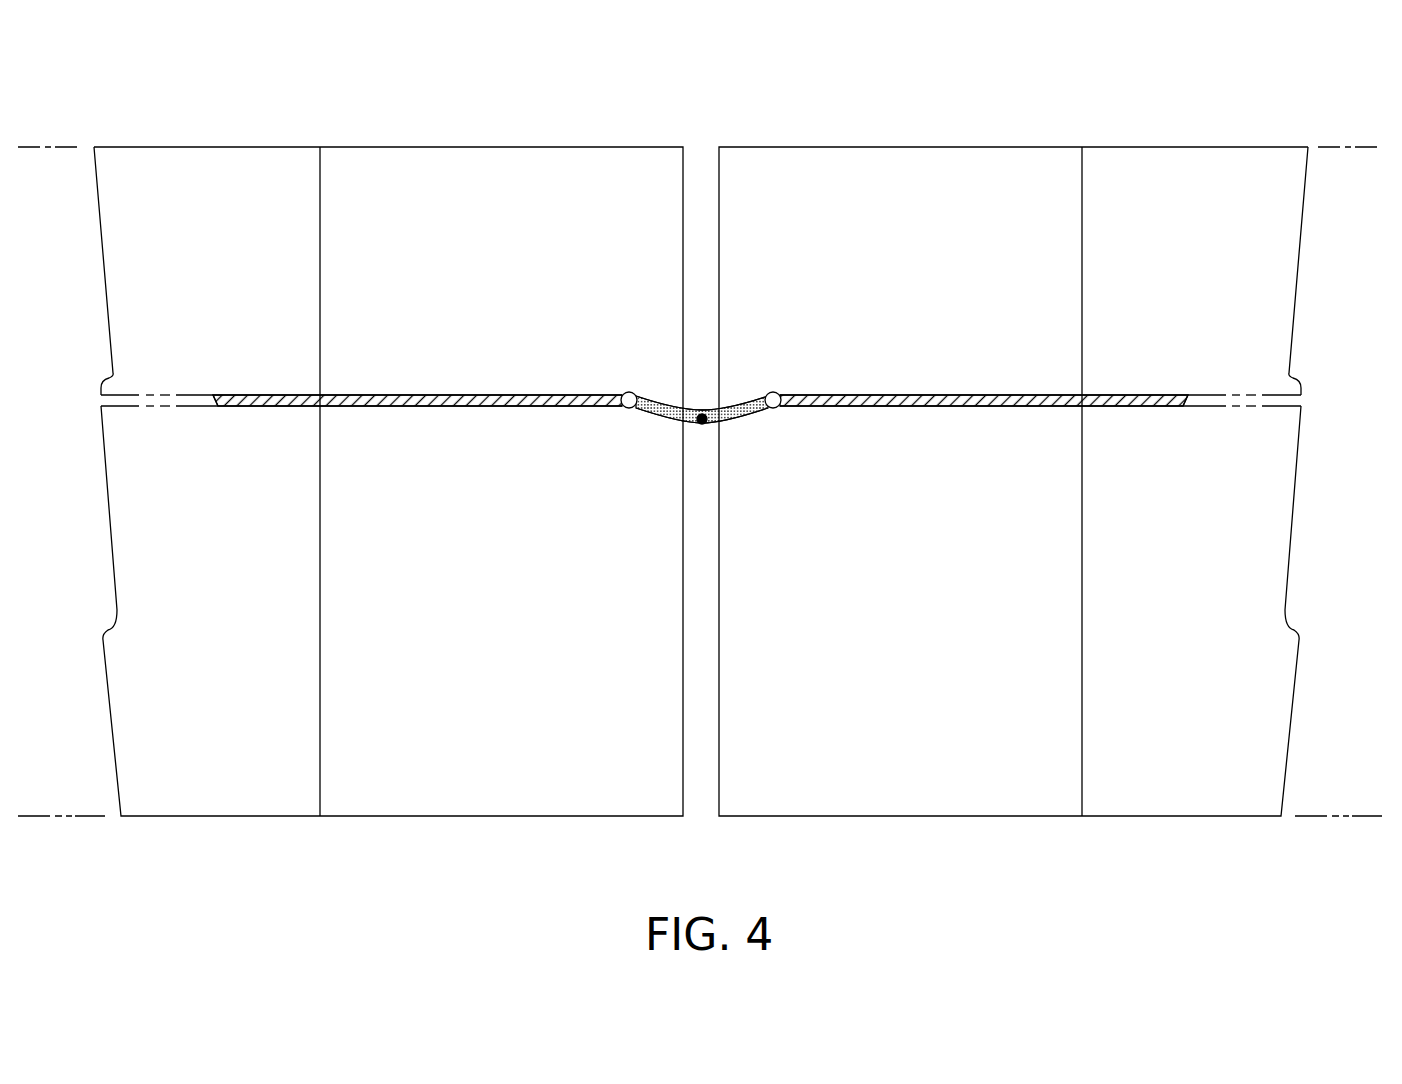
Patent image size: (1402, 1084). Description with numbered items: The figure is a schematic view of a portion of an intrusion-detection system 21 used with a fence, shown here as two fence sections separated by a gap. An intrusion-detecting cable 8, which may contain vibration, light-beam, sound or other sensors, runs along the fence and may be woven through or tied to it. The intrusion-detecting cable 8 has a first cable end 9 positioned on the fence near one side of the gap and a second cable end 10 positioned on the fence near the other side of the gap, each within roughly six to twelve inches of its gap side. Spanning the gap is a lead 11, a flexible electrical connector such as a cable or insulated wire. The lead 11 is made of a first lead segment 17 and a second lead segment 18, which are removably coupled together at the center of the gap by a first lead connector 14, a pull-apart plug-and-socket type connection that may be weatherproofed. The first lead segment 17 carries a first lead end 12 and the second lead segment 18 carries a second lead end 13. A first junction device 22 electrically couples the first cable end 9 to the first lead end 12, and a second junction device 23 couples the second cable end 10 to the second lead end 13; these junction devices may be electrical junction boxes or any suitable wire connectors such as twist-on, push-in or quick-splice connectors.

The intrusion-detection system 21 is at (178, 105).
The intrusion-detecting cable 8 is at (440, 393).
The first cable end 9 is at (623, 392).
The second cable end 10 is at (780, 392).
The lead 11 is at (702, 386).
The first lead end 12 is at (645, 414).
The second lead end 13 is at (757, 414).
The first lead connector 14 is at (702, 426).
The first lead segment 17 is at (669, 402).
The second lead segment 18 is at (734, 402).
The first junction device 22 is at (627, 410).
The second junction device 23 is at (775, 410).